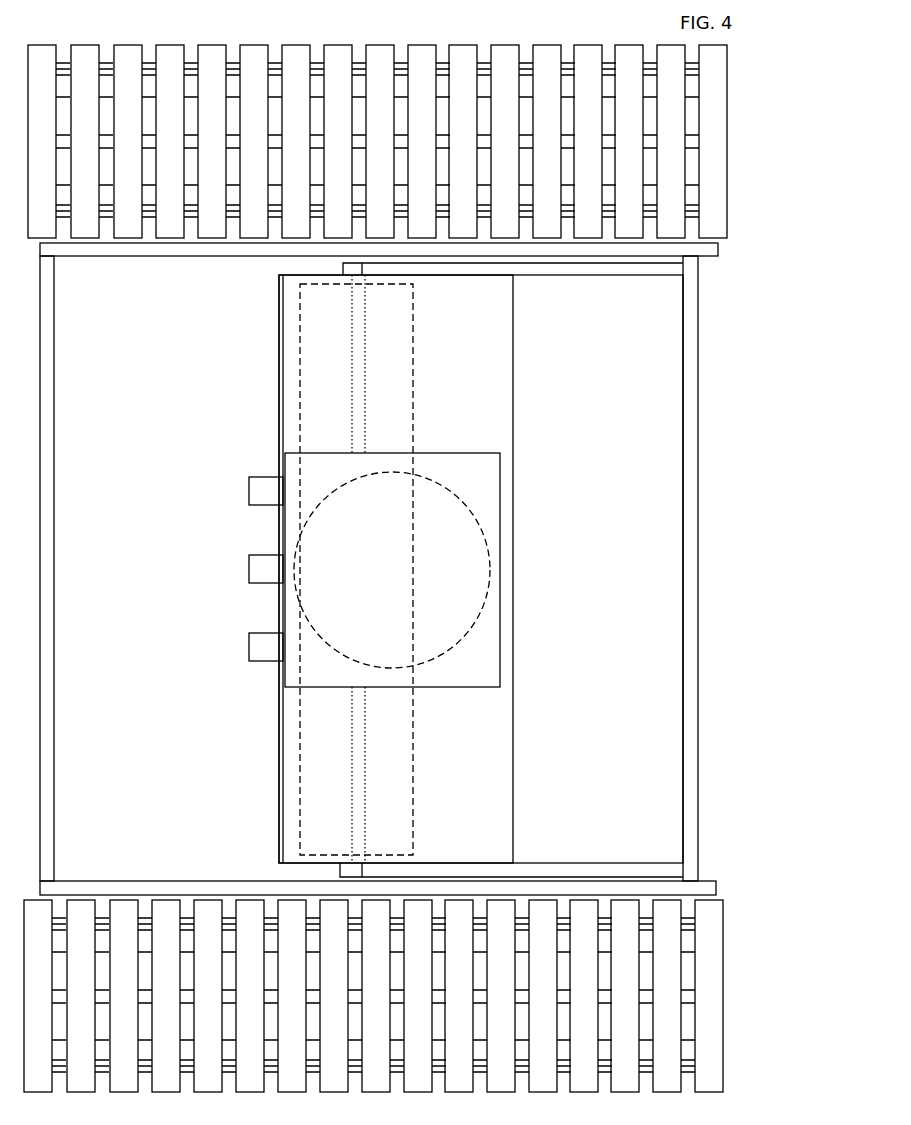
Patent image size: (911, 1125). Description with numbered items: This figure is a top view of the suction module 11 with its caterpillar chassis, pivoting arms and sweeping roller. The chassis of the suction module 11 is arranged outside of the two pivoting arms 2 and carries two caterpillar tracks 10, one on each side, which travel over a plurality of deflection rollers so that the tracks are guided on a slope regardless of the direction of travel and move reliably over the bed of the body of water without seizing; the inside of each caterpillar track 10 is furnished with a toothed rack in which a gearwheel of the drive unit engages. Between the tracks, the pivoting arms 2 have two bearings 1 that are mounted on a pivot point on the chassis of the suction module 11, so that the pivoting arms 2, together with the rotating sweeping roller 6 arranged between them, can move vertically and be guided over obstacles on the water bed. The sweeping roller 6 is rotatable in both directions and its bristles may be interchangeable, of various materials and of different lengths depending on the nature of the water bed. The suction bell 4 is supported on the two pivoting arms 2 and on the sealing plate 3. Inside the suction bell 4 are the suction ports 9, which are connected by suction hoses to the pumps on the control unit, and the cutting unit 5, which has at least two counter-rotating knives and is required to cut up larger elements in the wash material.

The bearings 1 is at (692, 883).
The pivoting arms 2 is at (578, 865).
The sealing plate 3 is at (578, 383).
The suction bell 4 is at (512, 362).
The cutting unit 5 is at (483, 535).
The sweeping roller 6 is at (408, 780).
The suction ports 9 is at (268, 492).
The caterpillar tracks 10 is at (713, 117).
The suction module 11 is at (733, 327).